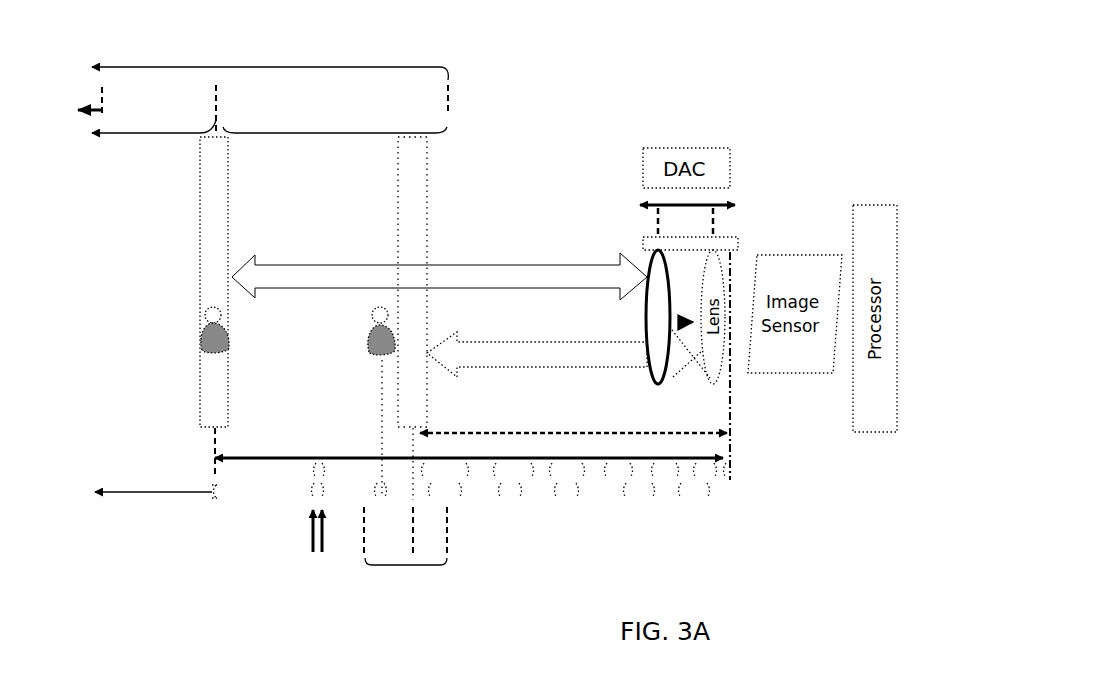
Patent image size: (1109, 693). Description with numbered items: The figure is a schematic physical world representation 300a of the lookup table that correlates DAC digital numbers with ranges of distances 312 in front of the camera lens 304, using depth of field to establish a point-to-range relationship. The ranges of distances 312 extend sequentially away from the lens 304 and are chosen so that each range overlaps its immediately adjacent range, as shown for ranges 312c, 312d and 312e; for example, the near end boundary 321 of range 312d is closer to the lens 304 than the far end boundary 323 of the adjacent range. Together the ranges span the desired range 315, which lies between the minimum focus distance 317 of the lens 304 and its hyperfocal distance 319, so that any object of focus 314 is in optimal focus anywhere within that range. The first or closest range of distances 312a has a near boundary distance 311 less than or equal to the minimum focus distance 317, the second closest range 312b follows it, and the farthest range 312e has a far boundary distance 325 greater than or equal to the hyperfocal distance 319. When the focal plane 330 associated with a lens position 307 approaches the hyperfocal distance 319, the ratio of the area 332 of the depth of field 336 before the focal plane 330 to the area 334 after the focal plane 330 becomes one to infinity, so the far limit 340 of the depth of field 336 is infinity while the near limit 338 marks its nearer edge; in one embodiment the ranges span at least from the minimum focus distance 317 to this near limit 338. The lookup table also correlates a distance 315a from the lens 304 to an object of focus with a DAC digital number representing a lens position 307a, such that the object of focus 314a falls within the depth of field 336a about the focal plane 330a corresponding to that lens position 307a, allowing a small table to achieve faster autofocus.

The physical world representation 300a is at (570, 42).
The lens 304 is at (651, 258).
The lens position 307 is at (653, 222).
The lens position 307a is at (717, 227).
The near boundary distance 311 is at (735, 470).
The range of distances 312 is at (452, 482).
The first range of distances 312a is at (733, 462).
The second closest range of distances 312b is at (725, 508).
The range of distances 312c is at (438, 497).
The range of distances 312d is at (308, 472).
The farthest range of distances 312e is at (235, 495).
The object of focus 314 is at (198, 332).
The object of focus 314a is at (368, 332).
The desired range 315 is at (267, 457).
The distance from the lens to an object of focus 315a is at (496, 437).
The minimum focus distance 317 is at (730, 410).
The hyperfocal distance 319 is at (215, 443).
The near end boundary 321 is at (324, 530).
The far end boundary 323 is at (318, 530).
The far boundary distance 325 is at (88, 500).
The focal plane 330 is at (202, 192).
The focal plane 330a is at (397, 177).
The area of the depth of field before the focal plane 332 is at (272, 133).
The area of the depth of field after the focal plane 334 is at (151, 158).
The depth of field 336 is at (187, 67).
The depth of field 336a is at (413, 570).
The near limit of the depth of field 338 is at (450, 90).
The far limit of the depth of field 340 is at (101, 88).